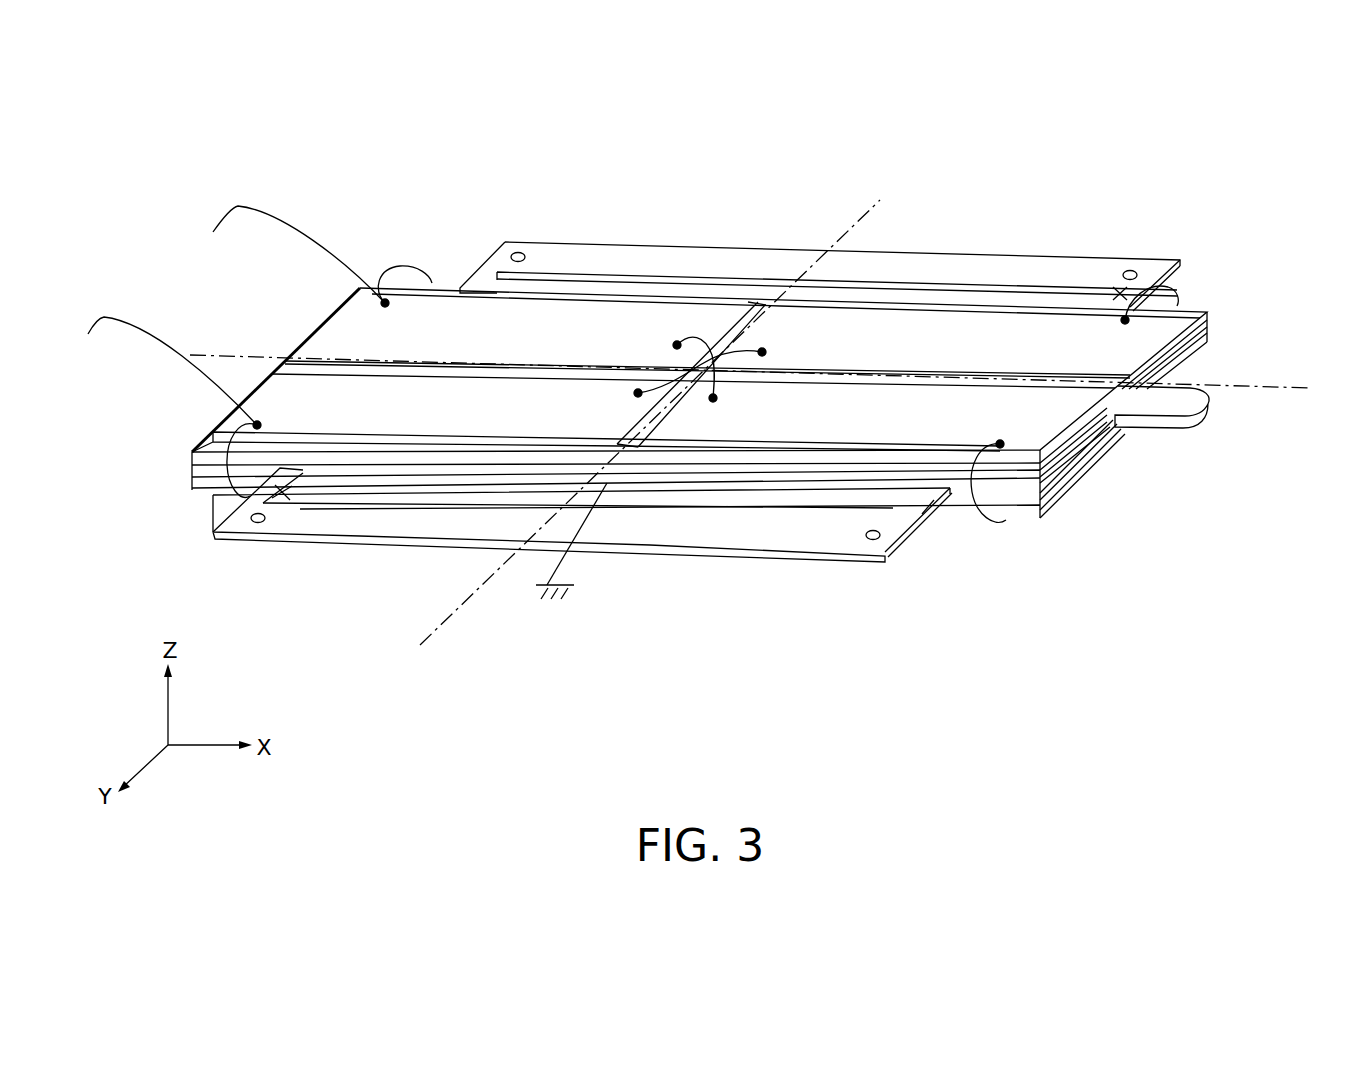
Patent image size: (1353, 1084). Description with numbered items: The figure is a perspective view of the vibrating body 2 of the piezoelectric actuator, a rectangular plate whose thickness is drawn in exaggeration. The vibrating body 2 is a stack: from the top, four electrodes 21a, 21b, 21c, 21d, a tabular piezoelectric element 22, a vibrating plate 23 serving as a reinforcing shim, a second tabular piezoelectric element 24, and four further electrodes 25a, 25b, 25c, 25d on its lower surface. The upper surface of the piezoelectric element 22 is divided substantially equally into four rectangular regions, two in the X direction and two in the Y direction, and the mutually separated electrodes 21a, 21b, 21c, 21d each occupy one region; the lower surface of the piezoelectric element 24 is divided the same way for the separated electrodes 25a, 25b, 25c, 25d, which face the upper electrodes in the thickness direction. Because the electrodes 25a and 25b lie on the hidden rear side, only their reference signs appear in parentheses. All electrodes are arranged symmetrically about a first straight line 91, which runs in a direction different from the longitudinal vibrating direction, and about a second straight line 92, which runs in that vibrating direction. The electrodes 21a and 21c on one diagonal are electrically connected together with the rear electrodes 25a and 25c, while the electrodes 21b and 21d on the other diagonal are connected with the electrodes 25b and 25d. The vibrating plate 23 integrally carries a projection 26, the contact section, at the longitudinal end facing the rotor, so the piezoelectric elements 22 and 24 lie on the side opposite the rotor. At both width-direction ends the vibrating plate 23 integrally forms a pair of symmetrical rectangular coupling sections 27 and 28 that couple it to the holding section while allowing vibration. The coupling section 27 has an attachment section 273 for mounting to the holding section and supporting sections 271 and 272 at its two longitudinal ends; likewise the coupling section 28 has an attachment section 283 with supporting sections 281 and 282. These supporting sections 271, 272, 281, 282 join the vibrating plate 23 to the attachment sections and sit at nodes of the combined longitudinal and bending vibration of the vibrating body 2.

The vibrating body 2 is at (948, 241).
The electrode 21a is at (968, 330).
The electrode 21b is at (610, 325).
The electrode 21c is at (340, 405).
The electrode 21d is at (862, 425).
The piezoelectric element 22 is at (805, 478).
The vibrating plate 23 is at (750, 488).
The piezoelectric element 24 is at (700, 498).
The electrode 25a is at (1180, 301).
The electrode 25b is at (410, 273).
The electrode 25c is at (435, 510).
The electrode 25d is at (965, 520).
The projection 26 is at (1168, 402).
The coupling section 27 is at (877, 262).
The supporting section 271 is at (1115, 283).
The supporting section 272 is at (483, 278).
The attachment section 273 is at (735, 262).
The coupling section 28 is at (625, 528).
The supporting section 281 is at (932, 510).
The supporting section 282 is at (283, 500).
The attachment section 283 is at (510, 523).
The first straight line 91 is at (437, 640).
The second straight line 92 is at (1262, 400).